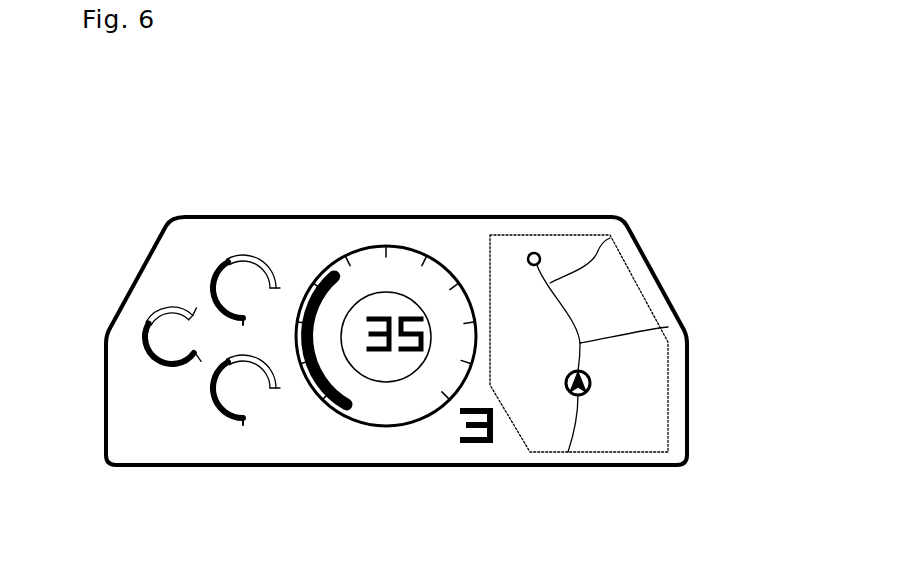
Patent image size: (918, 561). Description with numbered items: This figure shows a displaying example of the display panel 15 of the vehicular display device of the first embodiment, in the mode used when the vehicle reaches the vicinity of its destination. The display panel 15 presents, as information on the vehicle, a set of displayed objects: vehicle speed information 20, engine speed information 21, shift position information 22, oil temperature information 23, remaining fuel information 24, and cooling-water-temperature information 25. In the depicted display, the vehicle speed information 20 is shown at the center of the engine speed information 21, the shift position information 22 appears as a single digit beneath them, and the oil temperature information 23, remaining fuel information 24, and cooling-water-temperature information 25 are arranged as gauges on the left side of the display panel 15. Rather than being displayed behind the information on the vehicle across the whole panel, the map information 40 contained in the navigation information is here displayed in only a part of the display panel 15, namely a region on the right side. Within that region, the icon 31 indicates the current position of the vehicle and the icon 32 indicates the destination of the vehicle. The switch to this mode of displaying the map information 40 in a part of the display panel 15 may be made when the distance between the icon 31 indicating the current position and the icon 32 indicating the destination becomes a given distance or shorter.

The display panel 15 is at (548, 103).
The vehicle speed information 20 is at (385, 307).
The engine speed information 21 is at (410, 237).
The shift position information 22 is at (488, 452).
The oil temperature information 23 is at (228, 242).
The remaining fuel information 24 is at (152, 297).
The cooling-water-temperature information 25 is at (207, 425).
The icon indicating current position of the vehicle 31 is at (590, 385).
The icon indicating destination of the vehicle 32 is at (535, 252).
The map information 40 is at (632, 275).